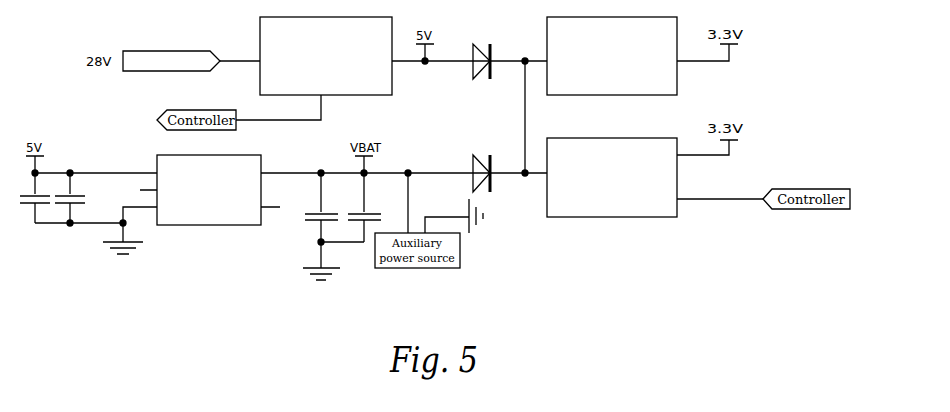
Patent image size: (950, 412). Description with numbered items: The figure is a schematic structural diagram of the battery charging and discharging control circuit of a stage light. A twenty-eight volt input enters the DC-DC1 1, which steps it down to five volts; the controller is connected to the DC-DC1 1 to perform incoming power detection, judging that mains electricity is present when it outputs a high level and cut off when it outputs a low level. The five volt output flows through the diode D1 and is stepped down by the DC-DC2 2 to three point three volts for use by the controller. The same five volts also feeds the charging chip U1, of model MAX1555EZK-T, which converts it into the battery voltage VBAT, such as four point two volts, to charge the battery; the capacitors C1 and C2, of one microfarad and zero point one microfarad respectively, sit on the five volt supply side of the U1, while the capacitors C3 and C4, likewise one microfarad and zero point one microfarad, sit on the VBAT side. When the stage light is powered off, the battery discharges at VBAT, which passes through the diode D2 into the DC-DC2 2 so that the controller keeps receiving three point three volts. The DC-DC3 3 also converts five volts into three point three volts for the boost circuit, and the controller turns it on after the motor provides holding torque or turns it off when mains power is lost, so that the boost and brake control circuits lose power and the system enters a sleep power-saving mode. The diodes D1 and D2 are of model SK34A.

The DC-DC1 converter 1 is at (326, 56).
The DC-DC2 converter 2 is at (612, 56).
The DC-DC3 converter 3 is at (612, 177).
The diode D1 is at (493, 59).
The diode D2 is at (494, 172).
The capacitor C1 is at (36, 201).
The capacitor C2 is at (72, 198).
The capacitor C3 is at (325, 220).
The capacitor C4 is at (366, 207).
The charging chip U1 is at (209, 199).